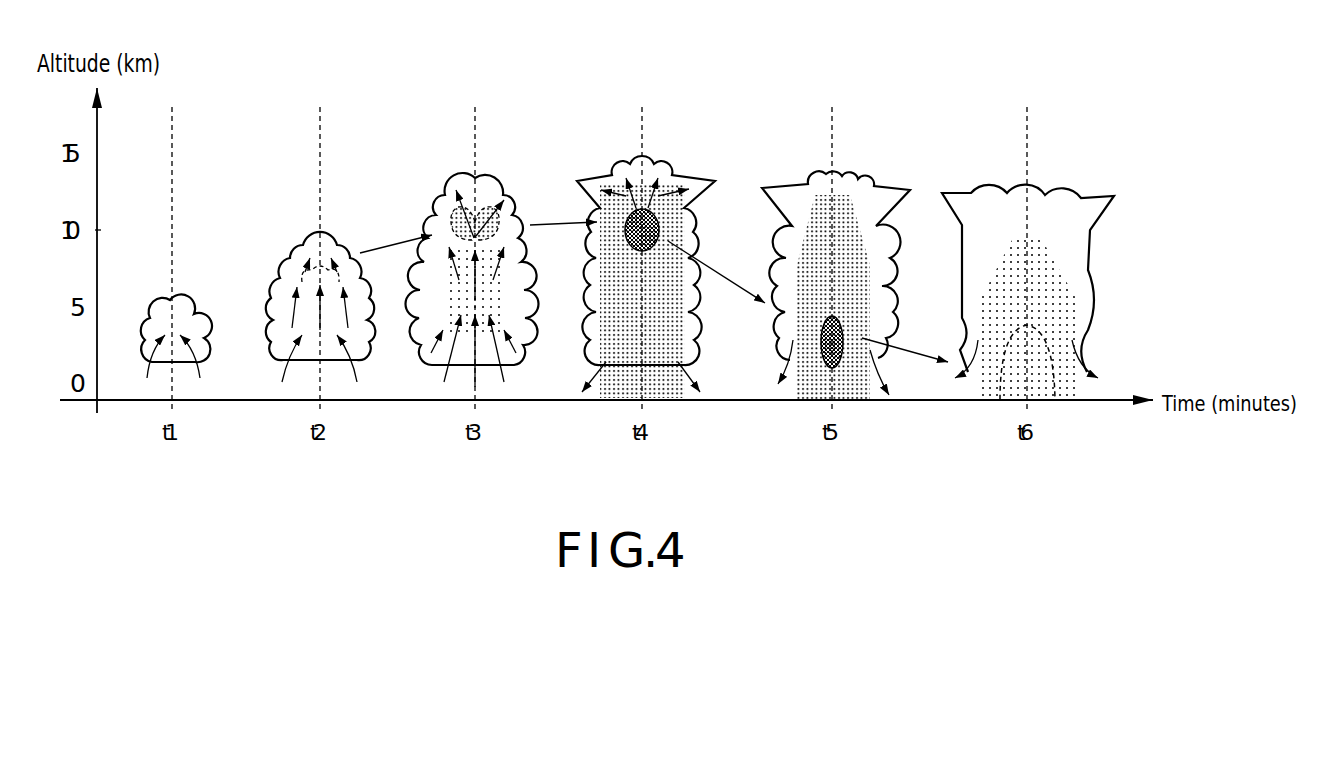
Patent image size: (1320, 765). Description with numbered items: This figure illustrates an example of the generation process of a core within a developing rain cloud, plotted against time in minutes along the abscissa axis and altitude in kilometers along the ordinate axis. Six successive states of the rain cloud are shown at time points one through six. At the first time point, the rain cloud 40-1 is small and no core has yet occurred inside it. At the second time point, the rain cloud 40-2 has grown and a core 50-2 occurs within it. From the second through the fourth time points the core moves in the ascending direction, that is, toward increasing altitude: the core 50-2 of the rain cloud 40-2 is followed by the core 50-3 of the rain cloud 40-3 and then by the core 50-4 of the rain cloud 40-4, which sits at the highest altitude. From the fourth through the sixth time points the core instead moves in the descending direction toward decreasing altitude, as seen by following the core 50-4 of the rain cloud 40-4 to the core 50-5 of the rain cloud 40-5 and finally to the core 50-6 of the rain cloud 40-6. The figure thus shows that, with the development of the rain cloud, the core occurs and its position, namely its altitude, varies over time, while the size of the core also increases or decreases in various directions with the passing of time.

The rain cloud 40-1 is at (206, 283).
The rain cloud 40-2 is at (328, 236).
The rain cloud 40-3 is at (483, 174).
The rain cloud 40-4 is at (645, 161).
The rain cloud 40-5 is at (853, 181).
The rain cloud 40-6 is at (1065, 196).
The core 50-2 is at (300, 274).
The core 50-3 is at (505, 212).
The core 50-4 is at (662, 230).
The core 50-5 is at (845, 332).
The core 50-6 is at (1050, 332).